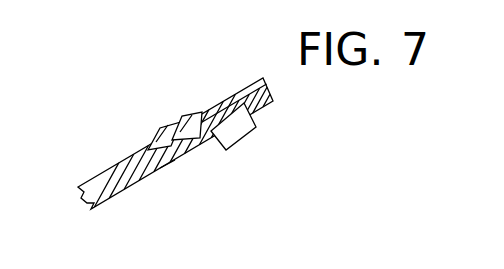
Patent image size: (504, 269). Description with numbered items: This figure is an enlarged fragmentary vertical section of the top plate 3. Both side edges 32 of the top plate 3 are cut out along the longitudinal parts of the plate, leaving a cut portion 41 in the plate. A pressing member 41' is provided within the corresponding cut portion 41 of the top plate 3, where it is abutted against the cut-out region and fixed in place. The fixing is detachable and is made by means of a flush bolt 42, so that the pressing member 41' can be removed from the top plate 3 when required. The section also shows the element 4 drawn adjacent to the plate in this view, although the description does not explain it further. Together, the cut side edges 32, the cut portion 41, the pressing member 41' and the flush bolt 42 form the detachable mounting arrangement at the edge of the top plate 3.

The top plate 3 is at (127, 186).
The side edges 32 is at (167, 166).
The block 4 is at (219, 143).
The cut portion 41 is at (167, 103).
The pressing members 41' is at (113, 133).
The flush bolt 42 is at (229, 97).